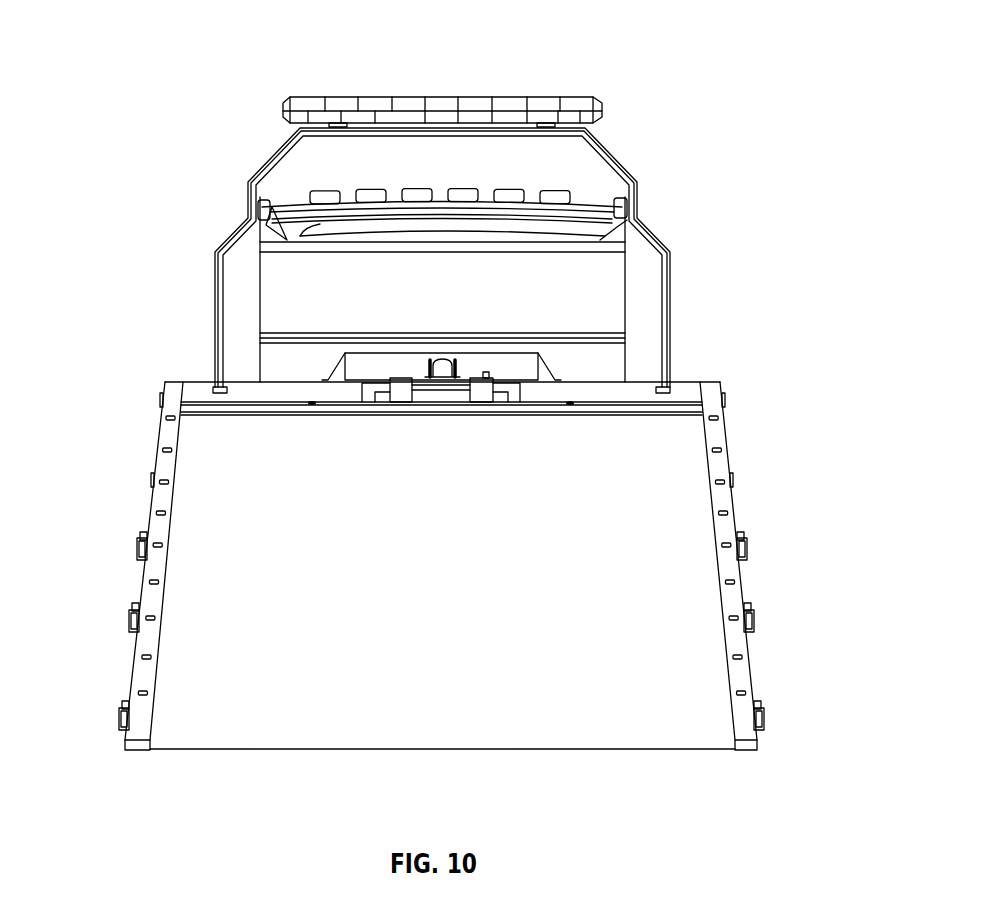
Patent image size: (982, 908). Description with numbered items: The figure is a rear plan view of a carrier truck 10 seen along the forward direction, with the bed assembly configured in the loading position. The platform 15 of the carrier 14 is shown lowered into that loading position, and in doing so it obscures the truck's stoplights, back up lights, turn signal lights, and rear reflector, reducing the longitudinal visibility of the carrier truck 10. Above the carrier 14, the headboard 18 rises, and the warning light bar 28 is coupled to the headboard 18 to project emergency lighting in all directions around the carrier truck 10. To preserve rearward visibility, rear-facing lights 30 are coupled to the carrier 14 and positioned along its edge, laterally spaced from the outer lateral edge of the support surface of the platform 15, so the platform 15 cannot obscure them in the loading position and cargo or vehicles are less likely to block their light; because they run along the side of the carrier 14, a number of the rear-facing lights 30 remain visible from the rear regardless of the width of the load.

The carrier truck 10 is at (208, 68).
The warning light bar 28 is at (548, 97).
The headboard 18 is at (606, 150).
The carrier 14 is at (752, 462).
The platform 15 is at (183, 513).
The rear-facing lights 30 is at (138, 545).